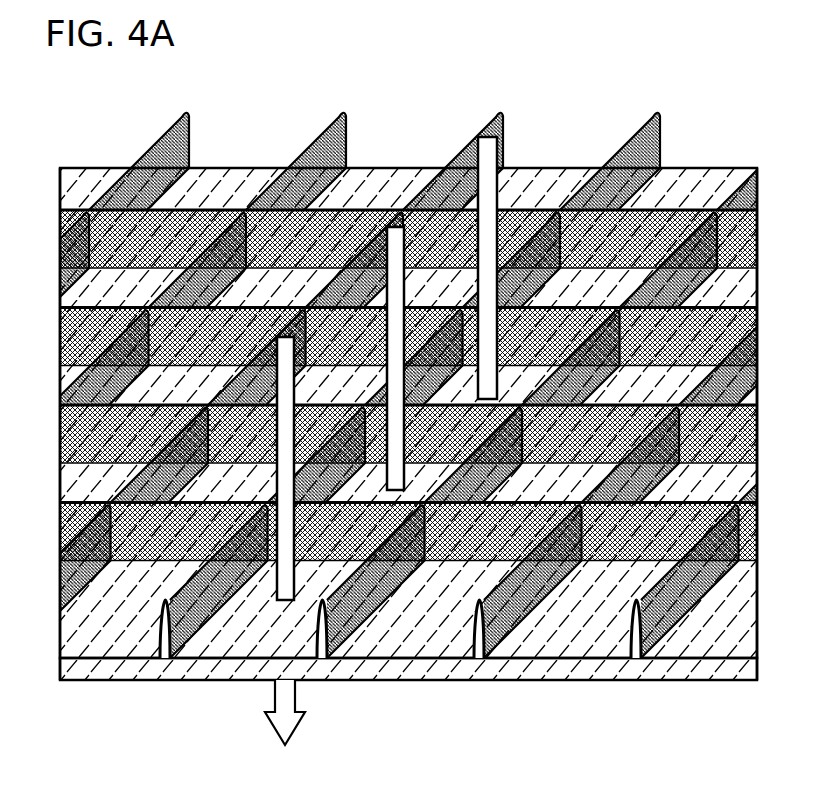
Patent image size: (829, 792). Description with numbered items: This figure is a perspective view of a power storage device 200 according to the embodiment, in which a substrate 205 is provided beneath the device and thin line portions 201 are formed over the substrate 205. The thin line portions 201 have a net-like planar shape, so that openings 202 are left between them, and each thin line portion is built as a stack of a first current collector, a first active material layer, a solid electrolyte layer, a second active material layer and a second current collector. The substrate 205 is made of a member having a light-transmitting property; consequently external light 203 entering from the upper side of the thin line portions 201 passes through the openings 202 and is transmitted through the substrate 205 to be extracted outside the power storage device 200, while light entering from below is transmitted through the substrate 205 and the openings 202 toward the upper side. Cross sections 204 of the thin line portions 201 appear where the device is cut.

The power storage device 200 is at (108, 94).
The thin line portions 201 is at (622, 150).
The openings 202 is at (143, 283).
The external light 203 is at (497, 113).
The cross sections 204 is at (172, 681).
The substrate 205 is at (565, 662).